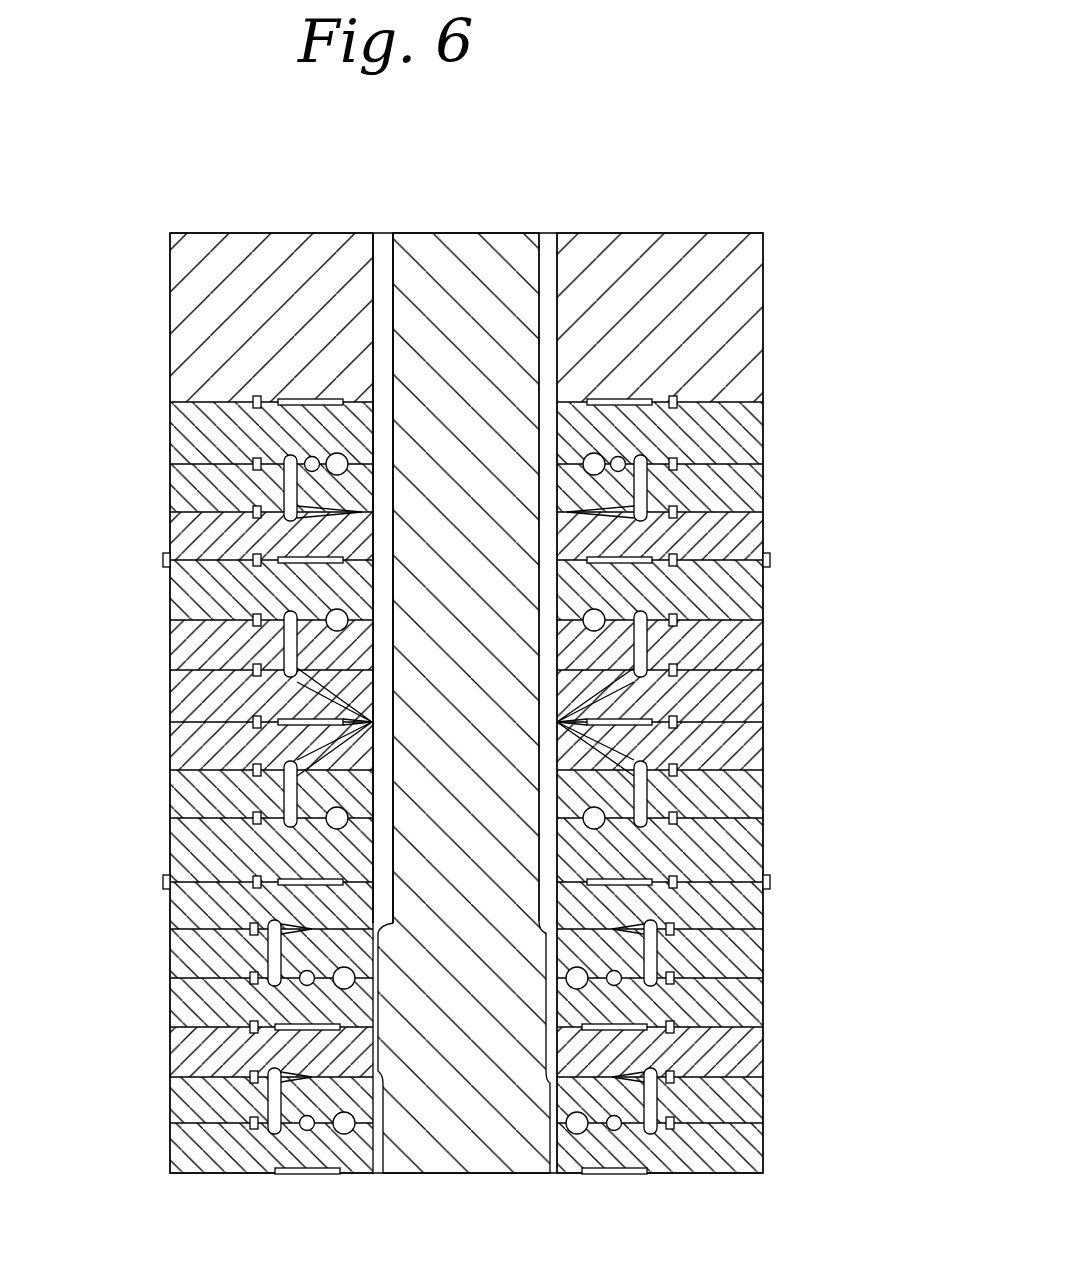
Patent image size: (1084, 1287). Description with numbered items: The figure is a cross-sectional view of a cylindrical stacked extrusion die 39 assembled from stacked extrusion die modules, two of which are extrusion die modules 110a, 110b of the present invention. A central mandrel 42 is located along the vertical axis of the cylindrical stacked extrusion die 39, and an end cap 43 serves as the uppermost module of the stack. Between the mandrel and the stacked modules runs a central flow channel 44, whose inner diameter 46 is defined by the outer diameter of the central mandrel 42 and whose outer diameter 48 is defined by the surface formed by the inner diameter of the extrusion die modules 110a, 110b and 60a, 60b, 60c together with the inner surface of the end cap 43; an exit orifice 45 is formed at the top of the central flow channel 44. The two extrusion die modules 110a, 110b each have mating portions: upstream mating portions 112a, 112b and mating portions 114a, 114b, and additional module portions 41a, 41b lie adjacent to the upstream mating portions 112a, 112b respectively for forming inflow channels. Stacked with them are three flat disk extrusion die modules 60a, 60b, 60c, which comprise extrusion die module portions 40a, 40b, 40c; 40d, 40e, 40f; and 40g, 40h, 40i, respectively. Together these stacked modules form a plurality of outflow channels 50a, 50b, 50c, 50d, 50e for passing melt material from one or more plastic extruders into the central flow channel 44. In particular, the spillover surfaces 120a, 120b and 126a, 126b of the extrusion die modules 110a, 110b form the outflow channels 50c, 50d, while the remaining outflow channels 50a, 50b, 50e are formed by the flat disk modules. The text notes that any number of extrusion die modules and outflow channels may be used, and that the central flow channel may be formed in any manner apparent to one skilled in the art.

The cylindrical stacked extrusion die 39 is at (798, 206).
The central mandrel 42 is at (512, 262).
The end cap 43 is at (735, 336).
The central flow channel 44 is at (382, 318).
The exit orifice 45 is at (552, 233).
The inner diameter 46 is at (394, 330).
The outer diameter 48 is at (373, 327).
The extrusion die module portion 40a is at (735, 1153).
The extrusion die module portion 40b is at (735, 1107).
The extrusion die module portion 40c is at (735, 1066).
The extrusion die module portion 40d is at (735, 1008).
The extrusion die module portion 40e is at (735, 964).
The extrusion die module portion 40f is at (735, 911).
The extrusion die module portion 40g is at (735, 539).
The extrusion die module portion 40h is at (735, 489).
The extrusion die module portion 40i is at (735, 438).
The additional module portion 41a is at (735, 861).
The additional module portion 41b is at (735, 597).
The flat disk extrusion die module 60a is at (557, 1100).
The flat disk extrusion die module 60b is at (557, 954).
The flat disk extrusion die module 60c is at (558, 481).
The extrusion die module 110a is at (566, 770).
The extrusion die module 110b is at (566, 671).
The mating portion 112a is at (735, 794).
The mating portion 112b is at (735, 653).
The mating portion 114a is at (735, 758).
The mating portion 114b is at (735, 698).
The outflow channel 50a is at (362, 1077).
The outflow channel 50b is at (372, 975).
The outflow channel 50c is at (372, 723).
The outflow channel 50d is at (330, 718).
The outflow channel 50e is at (300, 538).
The spillover surface 120a is at (337, 748).
The spillover surface 120b is at (337, 690).
The spillover surface 126a is at (287, 770).
The spillover surface 126b is at (287, 676).